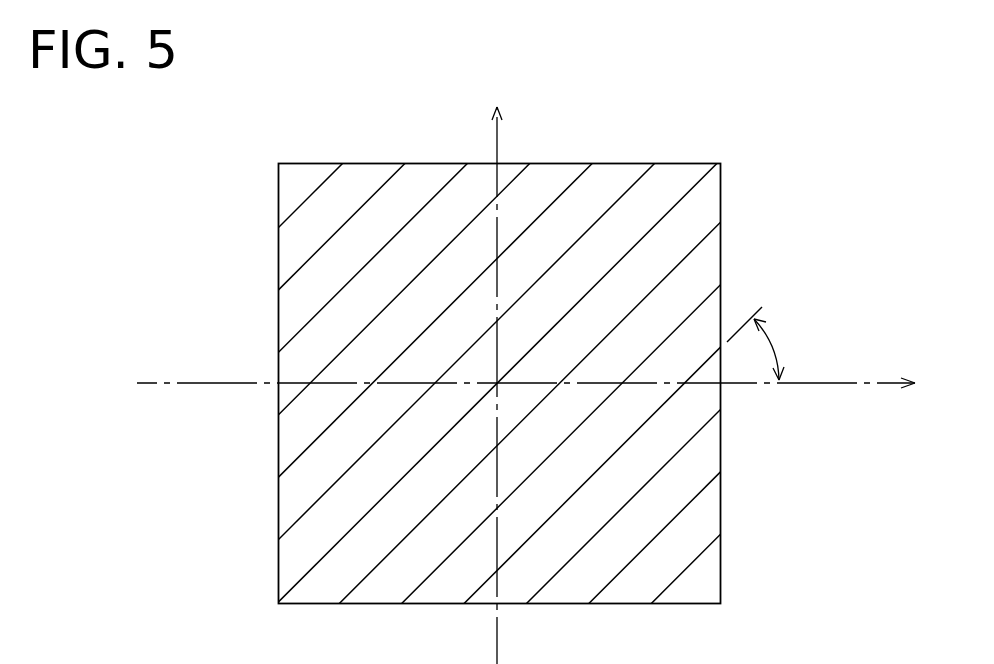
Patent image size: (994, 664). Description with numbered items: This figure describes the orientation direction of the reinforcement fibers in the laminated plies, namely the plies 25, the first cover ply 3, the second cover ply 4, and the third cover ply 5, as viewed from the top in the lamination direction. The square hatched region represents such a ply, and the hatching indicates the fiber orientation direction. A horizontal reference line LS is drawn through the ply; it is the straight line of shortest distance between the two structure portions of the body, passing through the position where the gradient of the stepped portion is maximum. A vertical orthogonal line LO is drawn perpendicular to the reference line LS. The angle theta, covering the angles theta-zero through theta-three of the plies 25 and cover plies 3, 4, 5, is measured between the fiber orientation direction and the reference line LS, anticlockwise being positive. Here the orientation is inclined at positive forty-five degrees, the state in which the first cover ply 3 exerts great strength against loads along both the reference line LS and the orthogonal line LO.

The plies 25 is at (497, 332).
The first cover ply 3 is at (497, 332).
The second cover ply 4 is at (497, 332).
The third cover ply 5 is at (335, 163).
The orthogonal line LO is at (498, 139).
The reference line LS is at (743, 384).